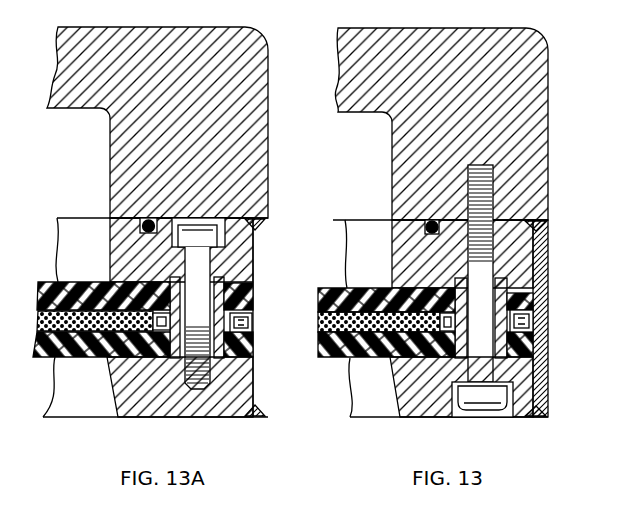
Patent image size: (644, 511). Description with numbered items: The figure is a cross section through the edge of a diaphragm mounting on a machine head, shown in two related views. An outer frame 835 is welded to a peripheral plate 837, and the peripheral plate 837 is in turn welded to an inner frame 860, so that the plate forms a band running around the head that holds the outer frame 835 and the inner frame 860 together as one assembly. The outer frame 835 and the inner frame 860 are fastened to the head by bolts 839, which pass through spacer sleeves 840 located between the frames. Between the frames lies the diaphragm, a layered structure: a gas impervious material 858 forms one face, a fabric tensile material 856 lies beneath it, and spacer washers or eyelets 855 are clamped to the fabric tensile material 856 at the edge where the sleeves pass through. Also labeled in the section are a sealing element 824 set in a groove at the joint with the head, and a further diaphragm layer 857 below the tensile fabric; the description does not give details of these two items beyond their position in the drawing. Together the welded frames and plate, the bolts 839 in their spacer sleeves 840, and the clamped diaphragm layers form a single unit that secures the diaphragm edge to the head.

In FIG. 13A, the O-ring seal 824 is at (146, 221).
In FIG. 13, the O-ring seal 824 is at (430, 221).
In FIG. 13A, the outer frame 835 is at (248, 392).
In FIG. 13, the outer frame 835 is at (417, 403).
In FIG. 13, the peripheral plate 837 is at (541, 272).
In FIG. 13, the bolts 839 is at (477, 398).
In FIG. 13, the spacer sleeves 840 is at (510, 288).
In FIG. 13A, the spacer washers or eyelets 855 is at (243, 318).
In FIG. 13, the spacer washers or eyelets 855 is at (535, 322).
In FIG. 13, the fabric tensile material 856 is at (322, 327).
In FIG. 13, the lower face sheet 857 is at (322, 347).
In FIG. 13, the gas impervious material 858 is at (318, 296).
In FIG. 13, the inner frame 860 is at (398, 257).